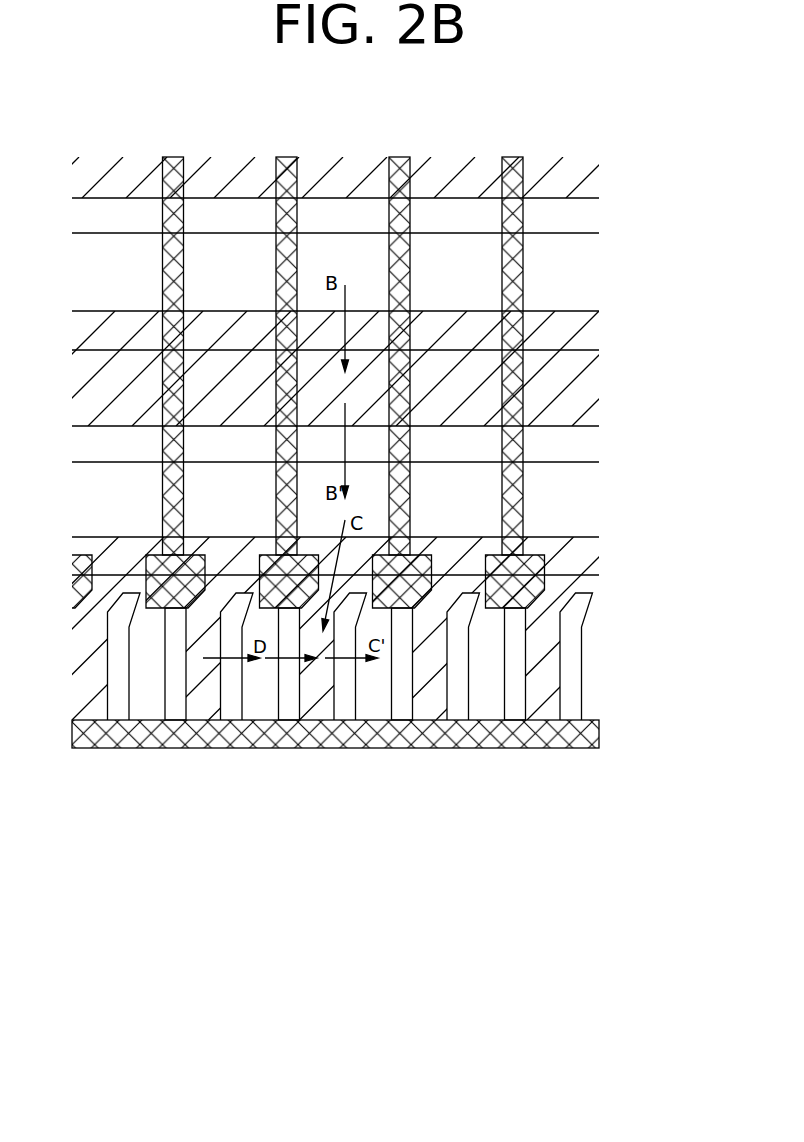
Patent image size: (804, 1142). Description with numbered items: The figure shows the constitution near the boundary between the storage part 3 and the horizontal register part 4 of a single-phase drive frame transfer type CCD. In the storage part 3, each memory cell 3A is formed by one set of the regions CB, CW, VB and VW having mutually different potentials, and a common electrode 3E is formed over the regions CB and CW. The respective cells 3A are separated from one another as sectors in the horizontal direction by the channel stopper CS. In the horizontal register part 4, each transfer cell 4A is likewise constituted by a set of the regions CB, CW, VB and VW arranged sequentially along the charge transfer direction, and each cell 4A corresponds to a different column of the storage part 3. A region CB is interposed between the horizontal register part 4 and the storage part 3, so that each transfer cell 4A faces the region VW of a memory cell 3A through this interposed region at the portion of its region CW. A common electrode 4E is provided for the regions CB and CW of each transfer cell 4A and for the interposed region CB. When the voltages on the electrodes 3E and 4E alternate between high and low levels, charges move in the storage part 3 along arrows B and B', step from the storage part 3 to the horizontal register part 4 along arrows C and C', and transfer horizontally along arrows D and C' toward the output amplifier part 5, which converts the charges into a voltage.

The storage part 3 is at (373, 348).
The memory cell 3A is at (704, 527).
The common electrode 3E is at (605, 422).
The horizontal register part 4 is at (378, 661).
The transfer cell 4A is at (162, 755).
The common electrode 4E is at (607, 527).
The output amplifier part 5 is at (595, 653).
The channel stopper CS is at (318, 441).